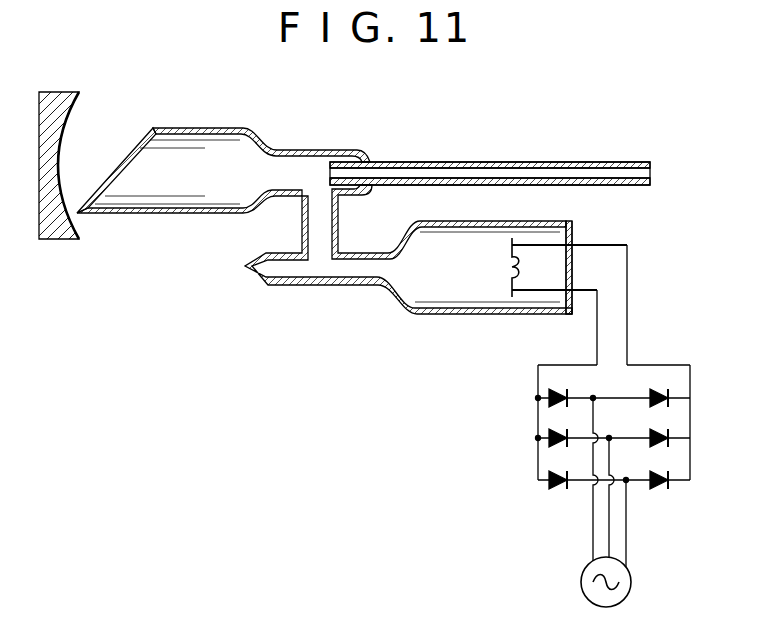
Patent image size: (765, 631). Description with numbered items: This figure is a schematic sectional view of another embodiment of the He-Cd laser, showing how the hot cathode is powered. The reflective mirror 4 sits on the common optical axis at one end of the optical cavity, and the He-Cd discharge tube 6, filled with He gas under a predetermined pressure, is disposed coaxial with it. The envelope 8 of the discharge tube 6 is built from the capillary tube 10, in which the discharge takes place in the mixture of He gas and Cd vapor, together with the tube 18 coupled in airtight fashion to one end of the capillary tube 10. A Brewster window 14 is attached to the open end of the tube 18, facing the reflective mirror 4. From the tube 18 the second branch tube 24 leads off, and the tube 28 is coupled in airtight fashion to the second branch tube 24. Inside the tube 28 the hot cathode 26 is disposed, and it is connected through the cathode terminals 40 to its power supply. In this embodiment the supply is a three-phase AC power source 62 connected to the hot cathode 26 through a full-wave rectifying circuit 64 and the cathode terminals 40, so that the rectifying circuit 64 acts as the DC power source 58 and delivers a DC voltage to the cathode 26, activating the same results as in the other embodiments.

The reflective mirror 4 is at (61, 92).
The He-Cd discharge tube 6 is at (514, 92).
The envelope 8 is at (598, 160).
The capillary tube 10 is at (473, 162).
The Brewster window 14 is at (128, 157).
The tube 18 is at (228, 128).
The second branch tube 24 is at (340, 218).
The hot cathode 26 is at (505, 266).
The tube 28 is at (422, 314).
The cathode terminals 40 is at (573, 245).
The DC power source 58 is at (575, 466).
The three-phase AC power source 62 is at (632, 581).
The full-wave rectifying circuit 64 is at (527, 413).